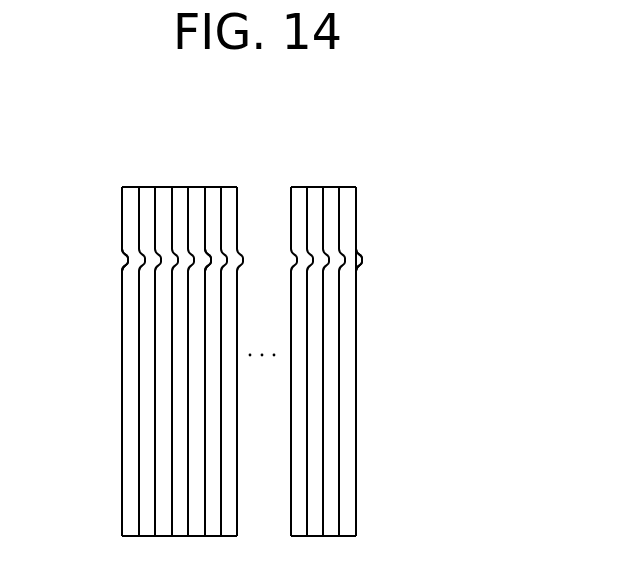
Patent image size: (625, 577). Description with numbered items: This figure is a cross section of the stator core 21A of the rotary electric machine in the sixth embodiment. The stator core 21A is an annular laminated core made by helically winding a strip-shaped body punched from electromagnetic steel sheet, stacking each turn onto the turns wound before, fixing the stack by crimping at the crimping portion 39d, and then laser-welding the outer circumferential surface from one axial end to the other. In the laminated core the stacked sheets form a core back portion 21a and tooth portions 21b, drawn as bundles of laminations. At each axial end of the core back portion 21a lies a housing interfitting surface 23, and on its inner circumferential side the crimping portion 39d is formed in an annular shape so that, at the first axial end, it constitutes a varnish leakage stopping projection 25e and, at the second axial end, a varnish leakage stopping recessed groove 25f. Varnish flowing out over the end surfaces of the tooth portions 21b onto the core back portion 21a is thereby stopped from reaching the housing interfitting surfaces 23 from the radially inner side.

The stator core 21A is at (104, 128).
The housing interfitting surface 23 is at (92, 187).
The varnish leakage stopping recessed groove 25f is at (122, 259).
The varnish leakage stopping projection 25e is at (366, 258).
The crimping portion 39d is at (202, 258).
The core back portion 21a is at (450, 185).
The tooth portions 21b is at (450, 283).